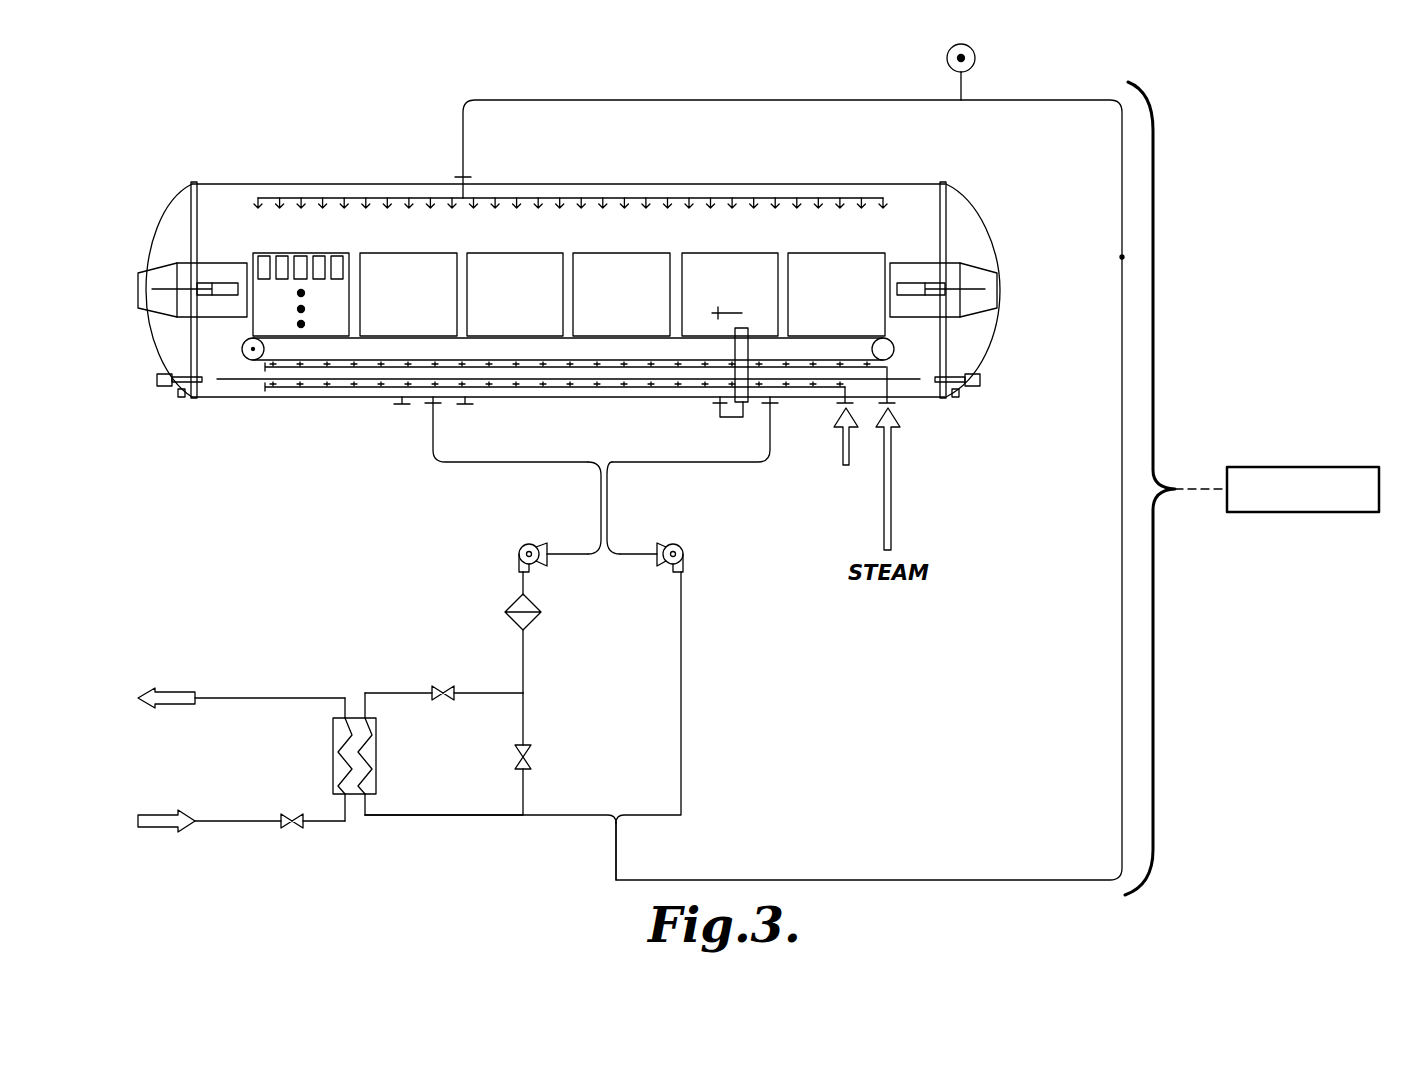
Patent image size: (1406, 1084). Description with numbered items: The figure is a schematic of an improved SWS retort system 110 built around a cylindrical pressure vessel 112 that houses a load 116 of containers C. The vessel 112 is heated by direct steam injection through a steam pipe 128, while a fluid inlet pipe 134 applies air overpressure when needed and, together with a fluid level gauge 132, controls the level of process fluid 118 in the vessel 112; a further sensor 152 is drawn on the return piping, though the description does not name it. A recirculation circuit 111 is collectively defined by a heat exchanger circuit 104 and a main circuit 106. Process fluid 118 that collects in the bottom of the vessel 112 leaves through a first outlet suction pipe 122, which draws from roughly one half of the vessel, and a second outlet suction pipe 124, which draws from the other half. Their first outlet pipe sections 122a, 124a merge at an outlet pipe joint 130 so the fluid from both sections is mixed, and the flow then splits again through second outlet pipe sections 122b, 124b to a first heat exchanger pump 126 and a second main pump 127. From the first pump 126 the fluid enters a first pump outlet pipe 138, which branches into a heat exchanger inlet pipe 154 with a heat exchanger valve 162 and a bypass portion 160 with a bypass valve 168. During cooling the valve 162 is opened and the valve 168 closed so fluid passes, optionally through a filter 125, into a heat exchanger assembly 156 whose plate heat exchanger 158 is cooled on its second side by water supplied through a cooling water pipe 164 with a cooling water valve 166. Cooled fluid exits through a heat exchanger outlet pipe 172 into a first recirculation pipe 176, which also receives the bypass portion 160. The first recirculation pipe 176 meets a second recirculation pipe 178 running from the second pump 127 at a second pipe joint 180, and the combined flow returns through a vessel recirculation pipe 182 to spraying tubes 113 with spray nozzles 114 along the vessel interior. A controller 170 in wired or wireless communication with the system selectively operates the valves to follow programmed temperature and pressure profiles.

The SWS retort system 110 is at (125, 121).
The recirculation circuit 111 is at (262, 547).
The heat exchanger circuit 104 is at (450, 597).
The main circuit 106 is at (702, 598).
The pressure vessel 112 is at (157, 223).
The spraying tubes 113 is at (592, 198).
The spray nozzles 114 is at (655, 205).
The load 116 is at (252, 248).
The containers C is at (264, 256).
The process fluid 118 is at (902, 385).
The first outlet suction pipe 122 is at (519, 475).
The first outlet pipe section 122a is at (433, 422).
The second outlet pipe section 122b is at (563, 553).
The second outlet suction pipe 124 is at (707, 475).
The first outlet pipe section 124a is at (768, 430).
The second outlet pipe section 124b is at (635, 553).
The filter 125 is at (535, 602).
The first heat exchanger pump 126 is at (520, 550).
The second main pump 127 is at (684, 548).
The steam pipe 128 is at (887, 372).
The outlet pipe joint 130 is at (610, 505).
The fluid level gauge 132 is at (745, 313).
The fluid inlet pipe 134 is at (845, 393).
The first pump outlet pipe 138 is at (523, 655).
The pressure sensor 152 is at (947, 58).
The heat exchanger inlet pipe 154 is at (490, 692).
The heat exchanger assembly 156 is at (338, 688).
The plate heat exchanger 158 is at (355, 718).
The bypass portion 160 is at (523, 703).
The heat exchanger valve 162 is at (440, 688).
The cooling water pipe 164 is at (243, 821).
The cooling water valve 166 is at (292, 830).
The bypass valve 168 is at (528, 749).
The controller 170 is at (1322, 467).
The heat exchanger outlet pipe 172 is at (462, 815).
The first recirculation pipe 176 is at (578, 815).
The second recirculation pipe 178 is at (682, 735).
The second pipe joint 180 is at (622, 828).
The vessel recirculation pipe 182 is at (605, 100).